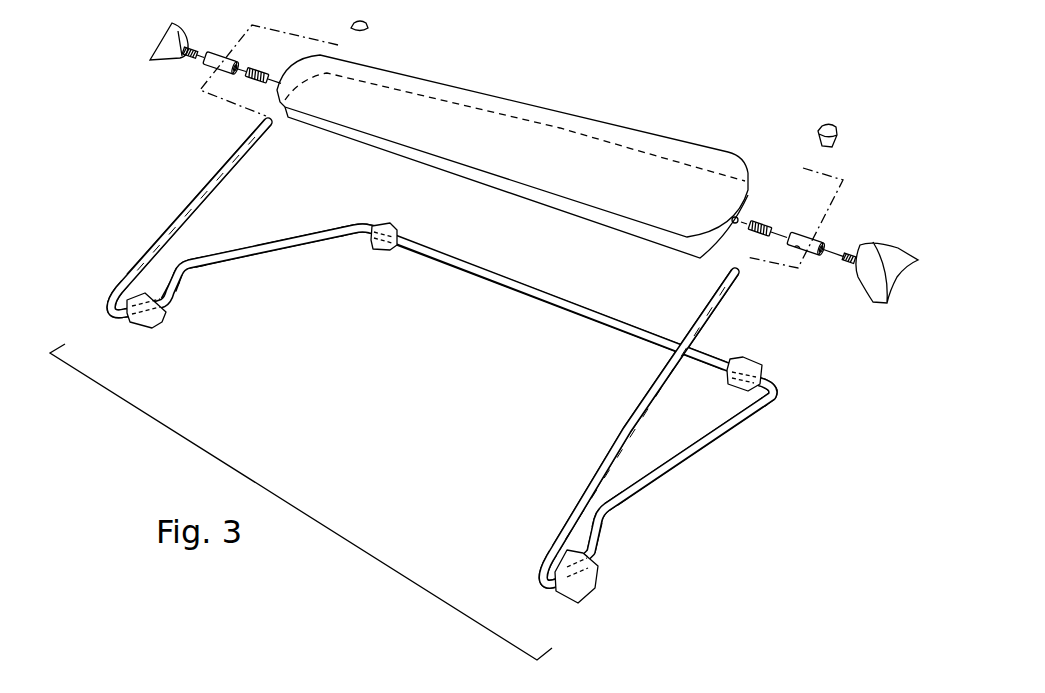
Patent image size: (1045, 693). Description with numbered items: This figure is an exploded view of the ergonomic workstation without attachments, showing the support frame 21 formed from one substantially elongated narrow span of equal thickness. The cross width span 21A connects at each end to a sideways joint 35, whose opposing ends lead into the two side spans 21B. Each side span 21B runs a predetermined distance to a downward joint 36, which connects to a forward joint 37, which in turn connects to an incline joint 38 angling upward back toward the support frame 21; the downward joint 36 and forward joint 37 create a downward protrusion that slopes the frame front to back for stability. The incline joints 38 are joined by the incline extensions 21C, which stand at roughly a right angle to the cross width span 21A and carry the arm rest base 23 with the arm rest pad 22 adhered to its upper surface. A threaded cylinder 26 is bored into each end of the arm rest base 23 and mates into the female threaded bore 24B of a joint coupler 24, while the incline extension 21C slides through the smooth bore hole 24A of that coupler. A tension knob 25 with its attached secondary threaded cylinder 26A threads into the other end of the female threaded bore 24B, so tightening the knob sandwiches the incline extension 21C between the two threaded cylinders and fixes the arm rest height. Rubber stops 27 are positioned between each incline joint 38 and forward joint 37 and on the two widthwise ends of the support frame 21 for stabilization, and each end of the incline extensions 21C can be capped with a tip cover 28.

The support frame 21 is at (551, 288).
The cross width span 21A is at (603, 318).
The side spans 21B is at (272, 250).
The incline extension 21C is at (173, 220).
The arm rest pad 22 is at (593, 168).
The arm rest base 23 is at (500, 185).
The joint coupler 24 is at (215, 67).
The smooth bore hole 24A is at (777, 283).
The female threaded bore 24B is at (853, 230).
The tension knob 25 is at (183, 33).
The threaded cylinder 26 is at (257, 70).
The secondary threaded cylinder 26A is at (182, 55).
The rubber stop 27 is at (137, 322).
The tip cover 28 is at (368, 27).
The sideways joint 35 is at (360, 223).
The downward joint 36 is at (185, 280).
The forward joint 37 is at (177, 302).
The incline joint 38 is at (108, 305).